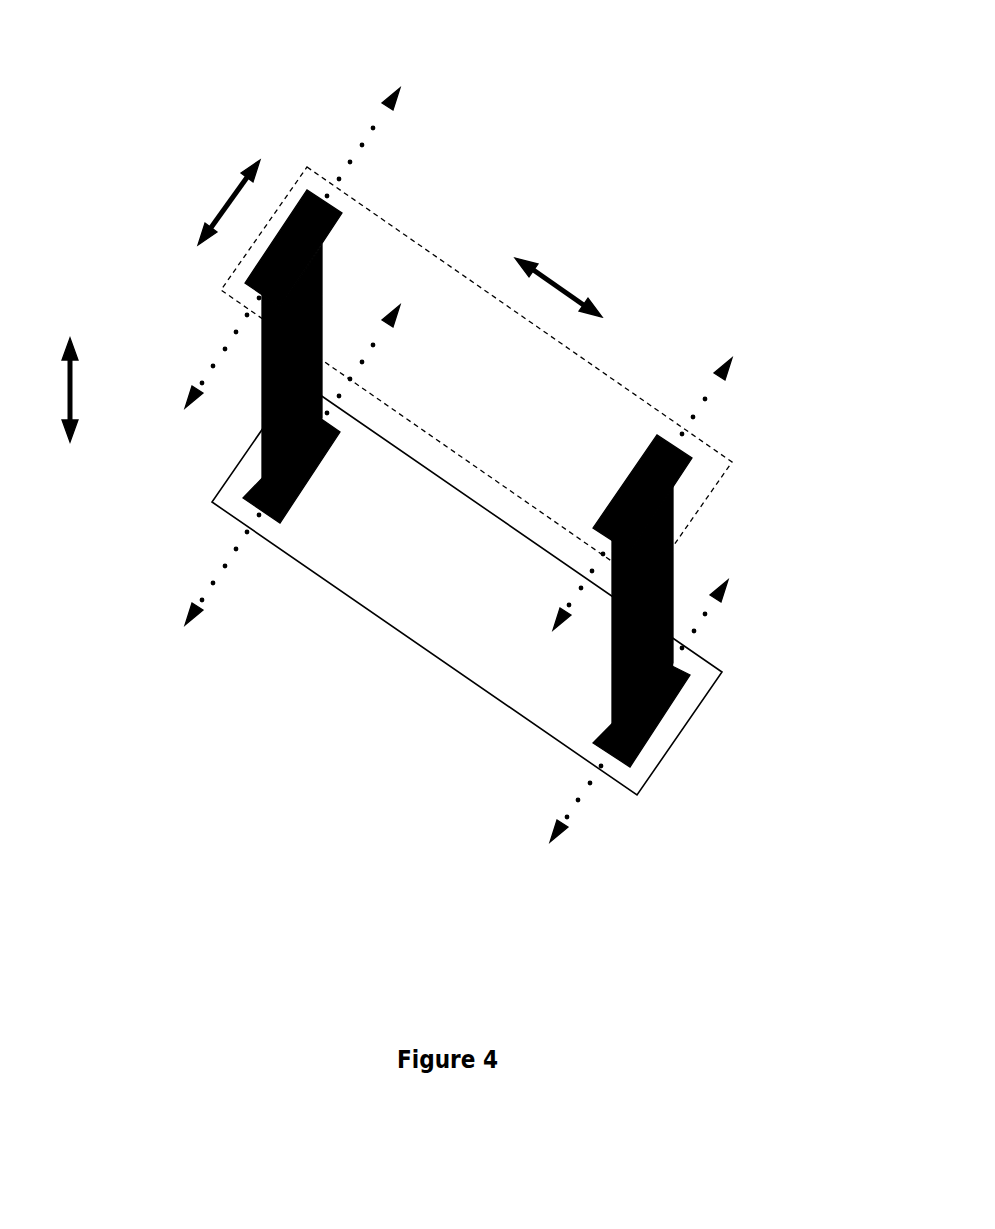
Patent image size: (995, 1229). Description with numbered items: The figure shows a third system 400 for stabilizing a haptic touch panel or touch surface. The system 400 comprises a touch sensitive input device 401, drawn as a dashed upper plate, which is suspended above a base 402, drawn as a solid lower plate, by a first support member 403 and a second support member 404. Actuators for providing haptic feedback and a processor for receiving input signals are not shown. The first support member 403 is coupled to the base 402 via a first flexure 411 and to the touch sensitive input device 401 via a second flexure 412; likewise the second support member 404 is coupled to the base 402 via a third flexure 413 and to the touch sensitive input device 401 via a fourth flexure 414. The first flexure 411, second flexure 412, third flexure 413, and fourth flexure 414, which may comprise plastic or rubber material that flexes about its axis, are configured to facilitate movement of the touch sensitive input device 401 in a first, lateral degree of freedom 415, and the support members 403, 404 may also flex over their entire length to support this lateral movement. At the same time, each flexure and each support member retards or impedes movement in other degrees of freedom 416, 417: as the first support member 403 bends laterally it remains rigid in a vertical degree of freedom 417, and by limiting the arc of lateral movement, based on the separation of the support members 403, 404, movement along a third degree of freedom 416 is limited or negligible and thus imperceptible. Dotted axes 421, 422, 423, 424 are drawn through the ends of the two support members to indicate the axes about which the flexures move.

The system 400 is at (621, 180).
The touch sensitive input device 401 is at (507, 380).
The base 402 is at (505, 606).
The first support member 403 is at (248, 425).
The second support member 404 is at (684, 570).
The first flexure 411 is at (246, 476).
The second flexure 412 is at (253, 308).
The third flexure 413 is at (692, 652).
The fourth flexure 414 is at (692, 482).
The first degree of freedom 415 is at (558, 285).
The third degree of freedom 416 is at (57, 399).
The vertical degree of freedom 417 is at (227, 202).
The first pillar lower axis 421 is at (184, 661).
The first pillar upper axis 422 is at (427, 74).
The second pillar lower axis 423 is at (530, 814).
The second pillar upper axis 424 is at (757, 350).